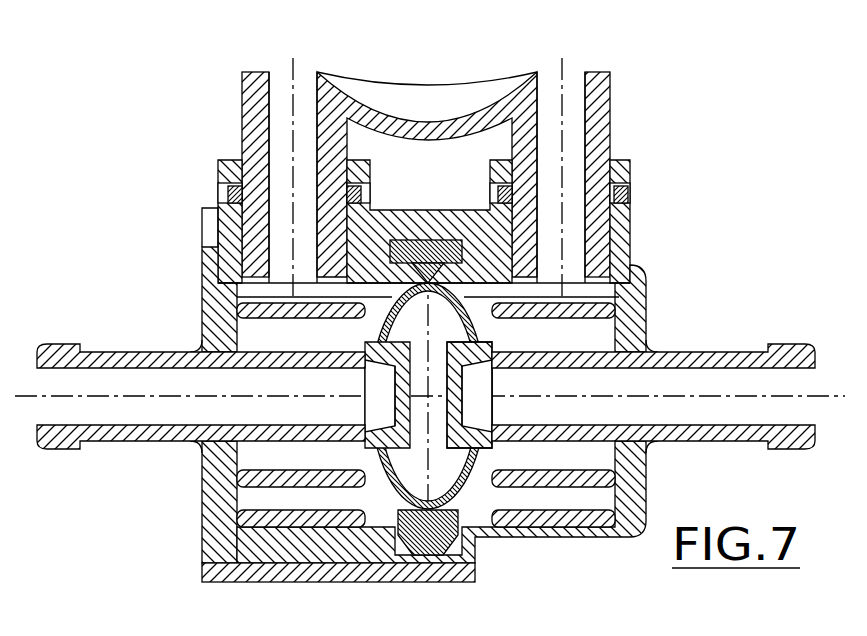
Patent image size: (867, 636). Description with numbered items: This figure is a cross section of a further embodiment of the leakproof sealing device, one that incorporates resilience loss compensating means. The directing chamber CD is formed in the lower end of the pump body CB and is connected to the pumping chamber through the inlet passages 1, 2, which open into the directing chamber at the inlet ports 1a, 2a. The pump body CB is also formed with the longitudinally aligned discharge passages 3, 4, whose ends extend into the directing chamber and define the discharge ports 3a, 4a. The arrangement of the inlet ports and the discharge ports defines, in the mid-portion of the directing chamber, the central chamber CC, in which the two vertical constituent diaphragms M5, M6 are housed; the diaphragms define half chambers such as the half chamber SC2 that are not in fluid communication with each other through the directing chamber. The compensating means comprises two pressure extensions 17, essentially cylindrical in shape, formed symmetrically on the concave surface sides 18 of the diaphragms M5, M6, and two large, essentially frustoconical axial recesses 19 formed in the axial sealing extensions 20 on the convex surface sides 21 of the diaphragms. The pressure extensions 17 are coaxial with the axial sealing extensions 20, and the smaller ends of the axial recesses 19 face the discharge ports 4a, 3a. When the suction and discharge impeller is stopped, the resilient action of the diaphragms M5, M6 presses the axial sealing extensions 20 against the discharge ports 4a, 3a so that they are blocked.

The inlet passage 1 is at (283, 117).
The inlet passage 2 is at (570, 158).
The discharge passage 3 is at (460, 93).
The discharge port 3a is at (493, 437).
The inlet port 1a is at (245, 248).
The inlet port 2a is at (612, 228).
The discharge passage 4 is at (135, 440).
The discharge port 4a is at (368, 437).
The pressure extension 17 is at (248, 326).
The concave surface side 18 is at (397, 547).
The axial recess 19 is at (396, 396).
The axial sealing extension 20 is at (395, 357).
The convex surface side 21 is at (292, 292).
The pump body CB is at (600, 93).
The central chamber CC is at (462, 485).
The directing chamber CD is at (597, 456).
The half chamber SC2 is at (275, 342).
The diaphragm M5 is at (383, 490).
The diaphragm M6 is at (490, 488).